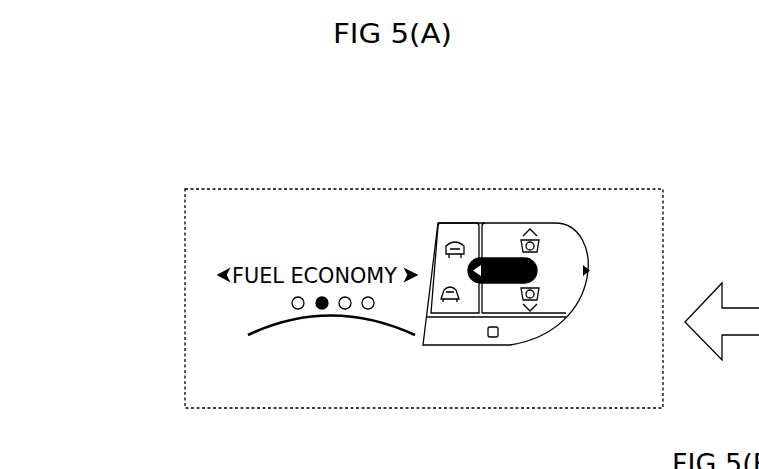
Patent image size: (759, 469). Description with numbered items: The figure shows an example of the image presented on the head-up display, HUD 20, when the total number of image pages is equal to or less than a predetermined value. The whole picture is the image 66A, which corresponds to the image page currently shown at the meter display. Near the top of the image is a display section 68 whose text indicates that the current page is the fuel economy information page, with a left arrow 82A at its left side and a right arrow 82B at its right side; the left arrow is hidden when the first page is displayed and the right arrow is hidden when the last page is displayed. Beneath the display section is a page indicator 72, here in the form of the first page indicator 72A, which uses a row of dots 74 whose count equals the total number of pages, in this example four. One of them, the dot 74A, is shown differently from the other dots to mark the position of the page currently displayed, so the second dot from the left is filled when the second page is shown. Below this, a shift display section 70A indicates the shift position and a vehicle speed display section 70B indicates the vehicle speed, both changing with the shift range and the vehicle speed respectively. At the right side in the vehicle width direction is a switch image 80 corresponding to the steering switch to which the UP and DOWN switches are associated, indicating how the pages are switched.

The head-up display (HUD) 20 is at (152, 368).
The display section 68 is at (408, 244).
The page indicator 72 is at (218, 110).
The first page indicator 72A is at (320, 132).
The dot 74 is at (251, 222).
The dot corresponding to displayed page 74A is at (298, 297).
The left arrow 82A is at (216, 275).
The right arrow 82B is at (418, 270).
The shift display section 70A is at (264, 368).
The vehicle speed display section 70B is at (340, 368).
The switch image 80 is at (567, 206).
The image 66A is at (662, 181).